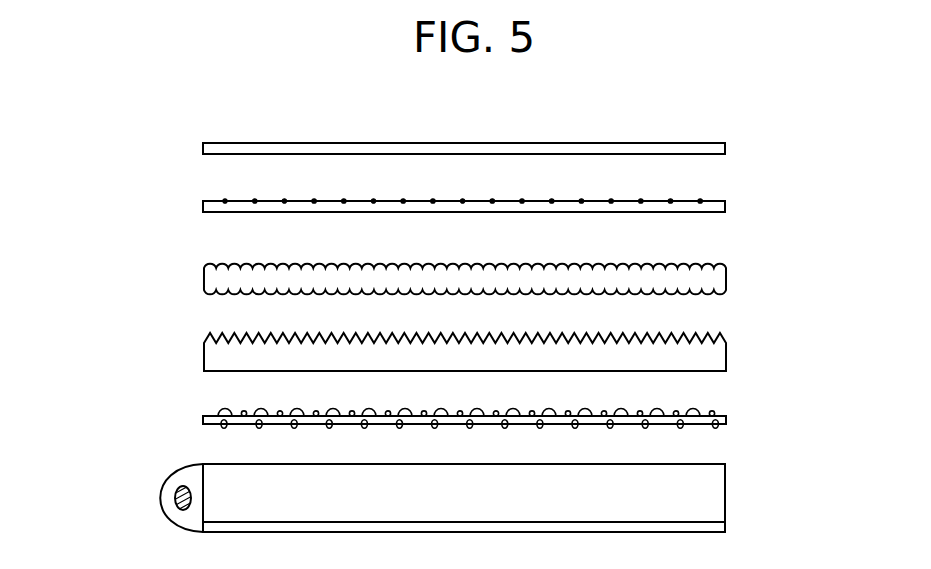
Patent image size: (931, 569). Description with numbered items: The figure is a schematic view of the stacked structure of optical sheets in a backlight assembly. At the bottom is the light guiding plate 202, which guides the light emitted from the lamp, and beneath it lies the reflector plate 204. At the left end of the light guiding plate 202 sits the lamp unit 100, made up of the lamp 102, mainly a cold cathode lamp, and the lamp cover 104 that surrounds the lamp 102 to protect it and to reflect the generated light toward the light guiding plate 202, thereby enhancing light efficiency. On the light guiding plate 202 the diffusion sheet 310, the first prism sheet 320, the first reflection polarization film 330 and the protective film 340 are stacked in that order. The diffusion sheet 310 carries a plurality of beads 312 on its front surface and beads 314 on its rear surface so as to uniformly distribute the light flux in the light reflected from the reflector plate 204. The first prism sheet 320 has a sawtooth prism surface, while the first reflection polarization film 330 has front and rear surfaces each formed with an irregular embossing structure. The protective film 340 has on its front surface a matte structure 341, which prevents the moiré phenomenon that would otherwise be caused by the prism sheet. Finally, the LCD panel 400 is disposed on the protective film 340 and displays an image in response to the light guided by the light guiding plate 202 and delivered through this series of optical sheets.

The LCD panel 400 is at (727, 149).
The matte structure 341 is at (701, 200).
The protective film 340 is at (727, 208).
The first reflection polarization film 330 is at (727, 283).
The first prism sheet 320 is at (725, 355).
The beads 312 is at (696, 409).
The diffusion sheet 310 is at (727, 420).
The beads 314 is at (719, 428).
The light guiding plate 202 is at (727, 485).
The reflector plate 204 is at (727, 529).
The lamp unit 100 is at (109, 495).
The lamp cover 104 is at (171, 467).
The lamp 102 is at (175, 498).